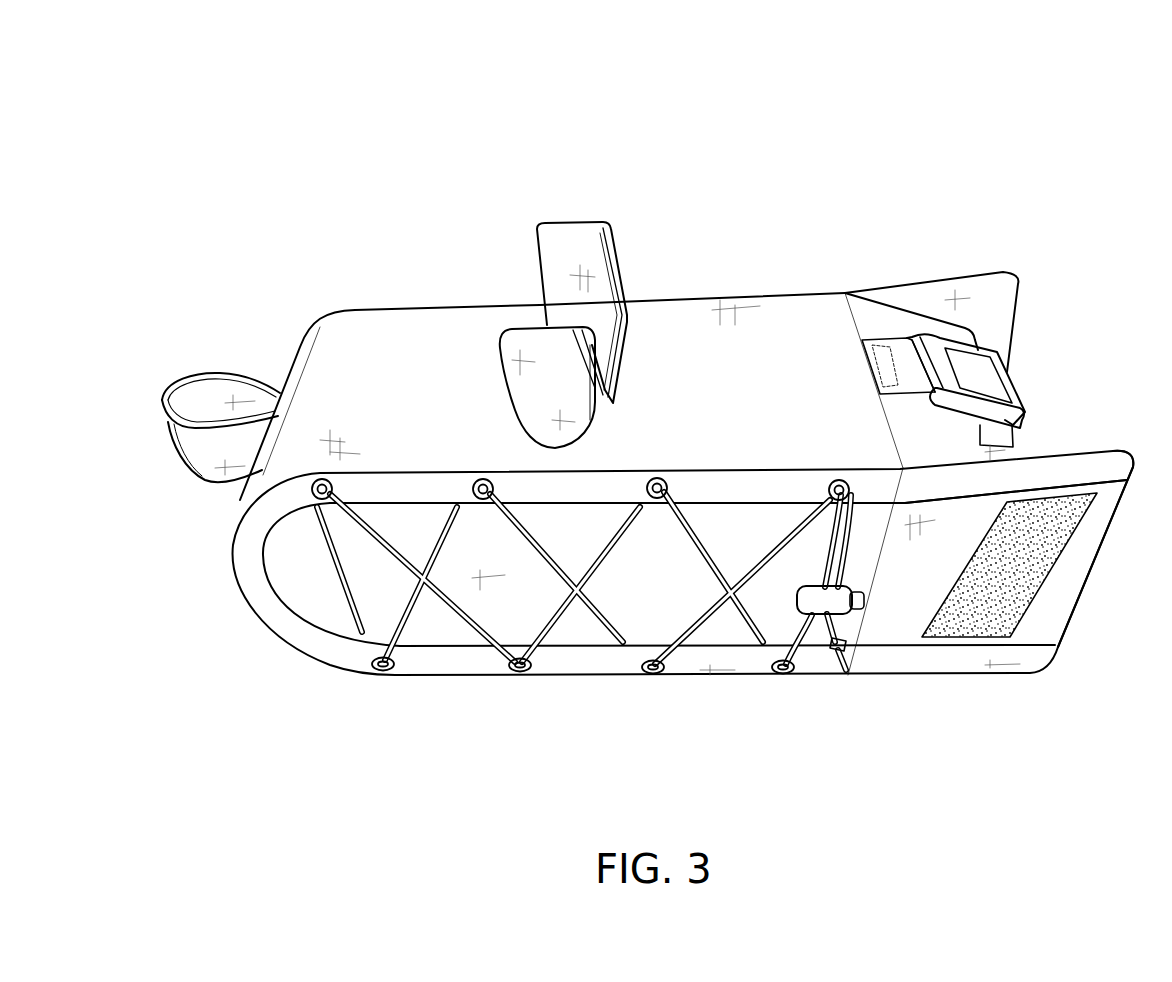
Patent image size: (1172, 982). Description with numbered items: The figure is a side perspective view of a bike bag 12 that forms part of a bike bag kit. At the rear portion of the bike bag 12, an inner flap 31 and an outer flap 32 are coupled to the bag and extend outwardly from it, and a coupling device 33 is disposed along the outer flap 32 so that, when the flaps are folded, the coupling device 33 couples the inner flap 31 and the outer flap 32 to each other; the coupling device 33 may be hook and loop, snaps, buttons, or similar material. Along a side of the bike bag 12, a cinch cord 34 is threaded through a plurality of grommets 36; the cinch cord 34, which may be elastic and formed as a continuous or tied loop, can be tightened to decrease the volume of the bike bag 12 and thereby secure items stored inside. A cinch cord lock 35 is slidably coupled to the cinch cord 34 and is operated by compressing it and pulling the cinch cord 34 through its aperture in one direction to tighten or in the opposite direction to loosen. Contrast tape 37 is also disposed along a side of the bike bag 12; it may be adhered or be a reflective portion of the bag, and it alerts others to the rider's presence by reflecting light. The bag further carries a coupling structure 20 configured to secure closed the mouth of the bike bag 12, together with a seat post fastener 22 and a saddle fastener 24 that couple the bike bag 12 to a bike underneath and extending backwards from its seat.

The bike bag 12 is at (746, 117).
The coupling structure 20 is at (1012, 383).
The seat post fastener 22 is at (212, 393).
The saddle fastener 24 is at (500, 305).
The inner flap 31 is at (1013, 447).
The outer flap 32 is at (927, 280).
The coupling device 33 is at (970, 623).
The cinch cord 34 is at (453, 620).
The cinch cord lock 35 is at (840, 607).
The grommets 36 is at (262, 510).
The contrast tape 37 is at (1117, 463).